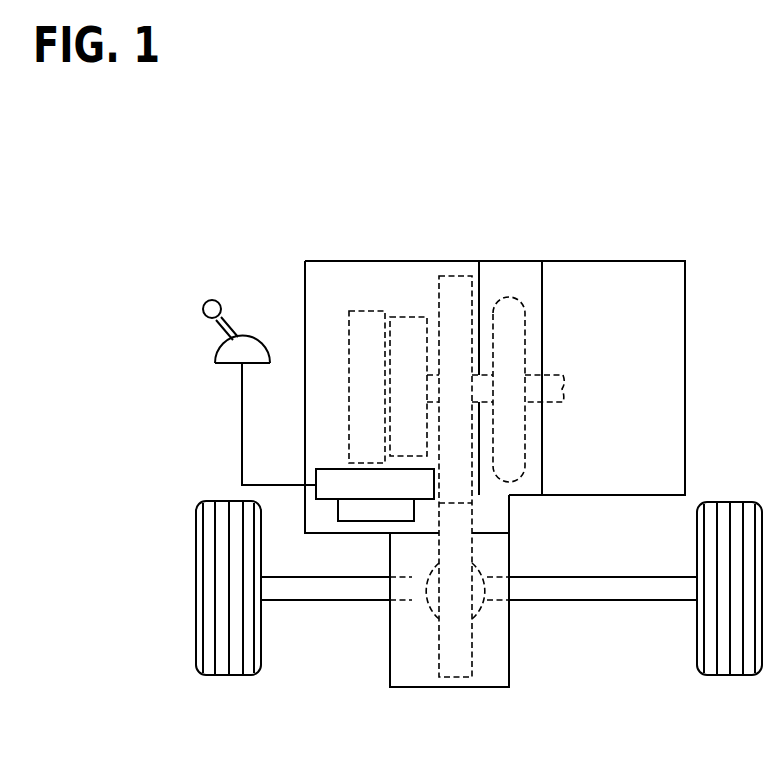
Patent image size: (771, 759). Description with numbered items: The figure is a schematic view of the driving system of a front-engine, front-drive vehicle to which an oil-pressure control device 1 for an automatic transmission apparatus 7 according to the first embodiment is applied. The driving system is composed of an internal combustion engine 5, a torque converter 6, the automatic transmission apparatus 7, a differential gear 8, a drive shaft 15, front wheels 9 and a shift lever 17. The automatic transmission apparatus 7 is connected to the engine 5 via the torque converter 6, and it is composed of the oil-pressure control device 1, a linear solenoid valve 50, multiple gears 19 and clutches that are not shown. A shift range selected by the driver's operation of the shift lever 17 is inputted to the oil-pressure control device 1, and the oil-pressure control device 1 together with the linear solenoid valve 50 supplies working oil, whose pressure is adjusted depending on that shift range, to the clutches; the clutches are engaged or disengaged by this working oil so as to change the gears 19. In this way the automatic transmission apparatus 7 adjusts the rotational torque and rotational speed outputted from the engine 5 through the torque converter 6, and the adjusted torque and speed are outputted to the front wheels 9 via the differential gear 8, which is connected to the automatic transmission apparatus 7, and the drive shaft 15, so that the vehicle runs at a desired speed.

The oil-pressure control device 1 is at (323, 499).
The internal combustion engine 5 is at (650, 293).
The torque converter 6 is at (509, 288).
The automatic transmission apparatus 7 is at (453, 268).
The differential gear 8 is at (492, 657).
The front wheels 9 is at (223, 660).
The drive shaft 15 is at (295, 590).
The shift lever 17 is at (245, 333).
The gears 19 is at (358, 327).
The linear solenoid valve 50 is at (357, 521).